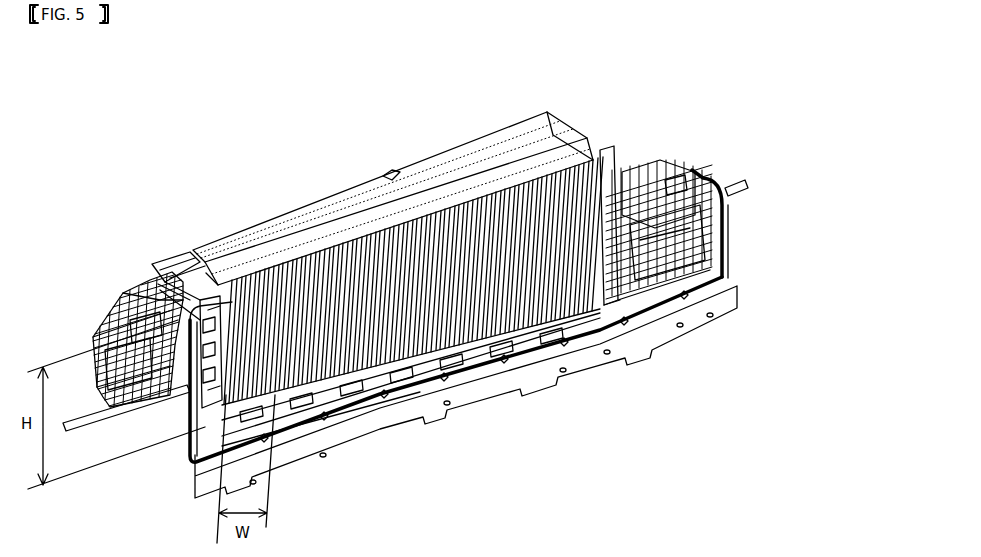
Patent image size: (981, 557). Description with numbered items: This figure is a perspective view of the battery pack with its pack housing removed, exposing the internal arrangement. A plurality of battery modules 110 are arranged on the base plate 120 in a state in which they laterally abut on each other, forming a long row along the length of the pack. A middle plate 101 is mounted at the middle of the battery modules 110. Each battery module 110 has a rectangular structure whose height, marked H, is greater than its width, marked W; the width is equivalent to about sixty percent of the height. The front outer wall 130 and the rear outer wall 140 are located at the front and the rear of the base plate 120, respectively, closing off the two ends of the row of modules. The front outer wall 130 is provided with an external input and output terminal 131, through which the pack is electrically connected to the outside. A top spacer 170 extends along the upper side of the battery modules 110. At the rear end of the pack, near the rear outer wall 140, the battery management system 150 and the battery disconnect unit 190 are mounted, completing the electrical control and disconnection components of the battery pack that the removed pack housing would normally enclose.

The middle plate 101 is at (430, 340).
The battery modules 110 is at (315, 337).
The base plate 120 is at (507, 343).
The front outer wall 130 is at (117, 302).
The external input and output terminal 131 is at (157, 278).
The rear outer wall 140 is at (723, 237).
The battery management system 150 is at (613, 163).
The top spacer 170 is at (255, 230).
The battery disconnect unit 190 is at (613, 160).